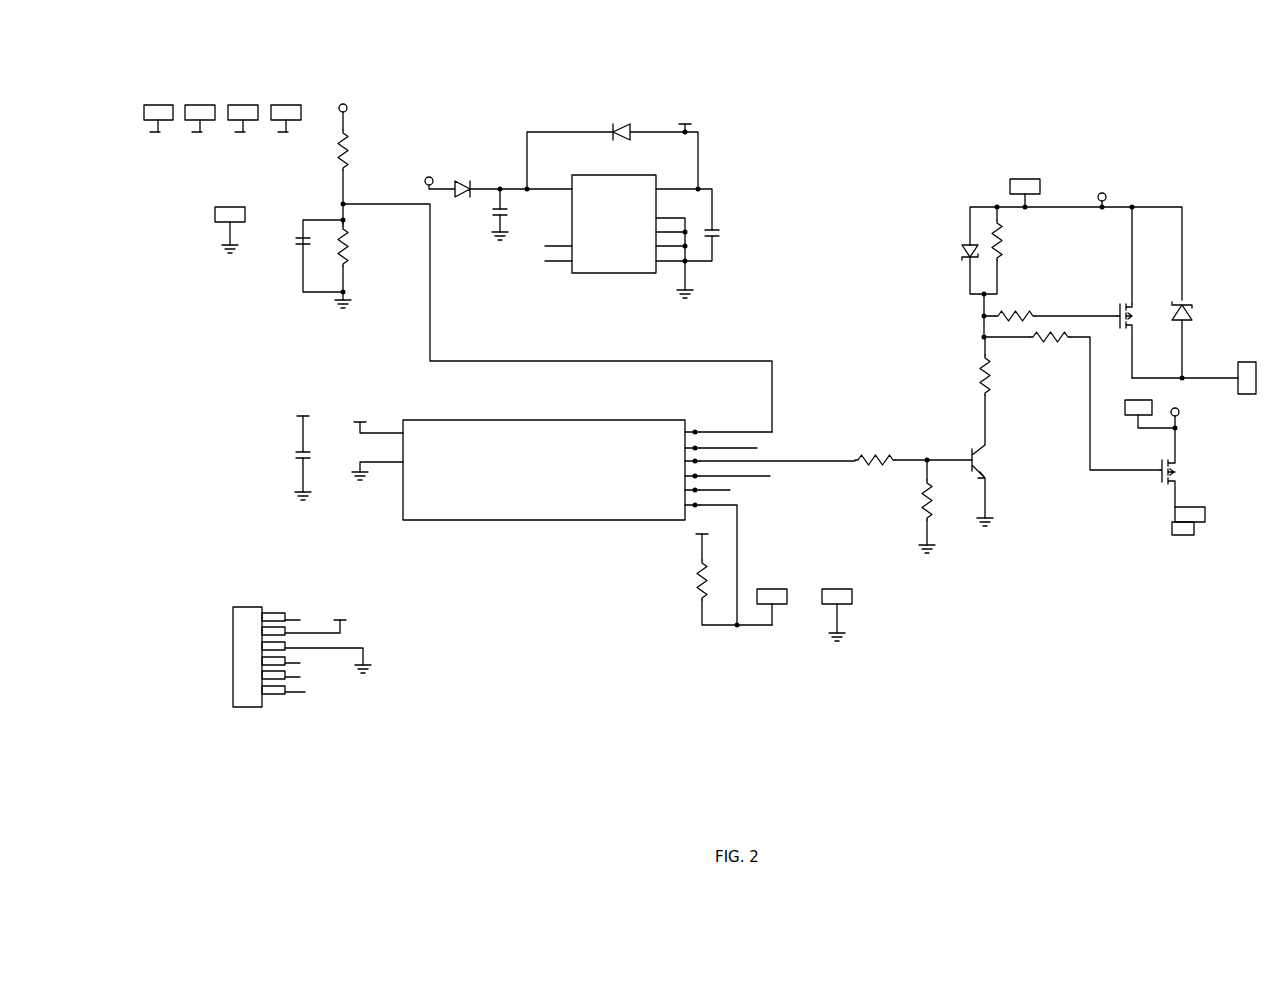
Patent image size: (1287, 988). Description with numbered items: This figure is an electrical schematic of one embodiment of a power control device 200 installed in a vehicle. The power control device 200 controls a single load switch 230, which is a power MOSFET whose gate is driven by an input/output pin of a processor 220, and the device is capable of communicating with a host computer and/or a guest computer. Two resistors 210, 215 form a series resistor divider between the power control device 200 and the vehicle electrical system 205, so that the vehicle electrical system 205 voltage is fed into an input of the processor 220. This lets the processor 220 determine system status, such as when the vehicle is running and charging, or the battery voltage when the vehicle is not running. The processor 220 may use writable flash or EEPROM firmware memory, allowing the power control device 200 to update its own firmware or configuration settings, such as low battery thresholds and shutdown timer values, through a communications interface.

The power control device 200 is at (823, 749).
The vehicle electrical system 205 is at (346, 96).
The resistor 210 is at (341, 150).
The resistor 215 is at (343, 268).
The processor 220 is at (468, 487).
The load switch 230 is at (1192, 458).